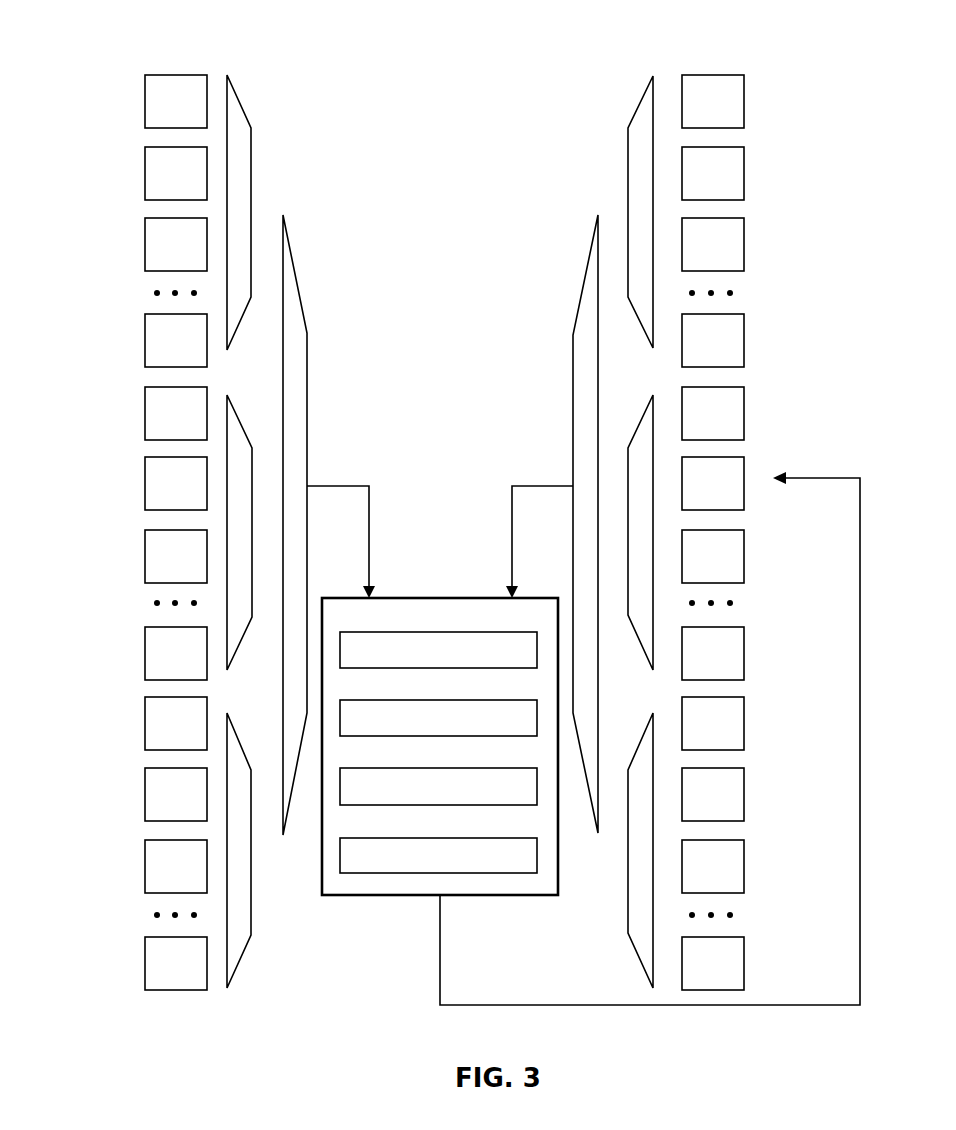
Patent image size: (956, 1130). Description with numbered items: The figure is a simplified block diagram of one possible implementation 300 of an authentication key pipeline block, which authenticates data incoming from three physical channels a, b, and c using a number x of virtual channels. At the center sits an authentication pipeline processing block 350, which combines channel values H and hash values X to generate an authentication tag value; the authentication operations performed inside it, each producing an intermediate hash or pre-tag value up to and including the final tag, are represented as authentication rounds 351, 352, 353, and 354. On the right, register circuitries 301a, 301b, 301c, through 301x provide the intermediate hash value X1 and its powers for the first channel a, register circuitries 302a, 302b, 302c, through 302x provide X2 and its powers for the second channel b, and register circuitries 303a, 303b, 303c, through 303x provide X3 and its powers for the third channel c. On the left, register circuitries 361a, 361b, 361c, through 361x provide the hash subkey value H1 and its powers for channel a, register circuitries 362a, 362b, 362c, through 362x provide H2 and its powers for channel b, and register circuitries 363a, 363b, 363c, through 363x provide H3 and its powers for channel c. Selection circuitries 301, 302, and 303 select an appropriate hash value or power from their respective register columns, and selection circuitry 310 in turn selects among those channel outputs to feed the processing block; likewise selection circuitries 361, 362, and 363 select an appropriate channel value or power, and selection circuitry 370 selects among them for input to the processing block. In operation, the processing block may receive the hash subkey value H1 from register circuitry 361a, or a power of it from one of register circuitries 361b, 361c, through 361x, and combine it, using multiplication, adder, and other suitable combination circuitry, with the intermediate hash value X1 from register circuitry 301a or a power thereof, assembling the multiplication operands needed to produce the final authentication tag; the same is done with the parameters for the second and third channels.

The implementation of an authentication key pipeline block 300 is at (129, 36).
The selection circuitry 301 is at (628, 175).
The register circuitry 301a is at (744, 102).
The register circuitry 301b is at (744, 174).
The register circuitry 301c is at (744, 245).
The register circuitry 301x is at (744, 341).
The selection circuitry 302 is at (643, 420).
The register circuitry 302a is at (744, 414).
The register circuitry 302b is at (744, 488).
The register circuitry 302c is at (744, 560).
The register circuitry 302x is at (744, 654).
The selection circuitry 303 is at (625, 900).
The register circuitry 303a is at (744, 724).
The register circuitry 303b is at (744, 795).
The register circuitry 303c is at (744, 867).
The register circuitry 303x is at (744, 945).
The selection circuitry 310 is at (573, 382).
The authentication pipeline processing block 350 is at (440, 598).
The authentication round 351 is at (476, 632).
The authentication round 352 is at (476, 700).
The authentication round 353 is at (476, 768).
The authentication round 354 is at (476, 838).
The selection circuitry 361 is at (251, 176).
The register circuitry 361a is at (145, 102).
The register circuitry 361b is at (145, 174).
The register circuitry 361c is at (145, 245).
The register circuitry 361x is at (145, 341).
The selection circuitry 362 is at (237, 417).
The register circuitry 362a is at (145, 414).
The register circuitry 362b is at (145, 484).
The register circuitry 362c is at (145, 557).
The register circuitry 362x is at (145, 654).
The selection circuitry 363 is at (251, 900).
The register circuitry 363a is at (145, 724).
The register circuitry 363b is at (145, 795).
The register circuitry 363c is at (145, 867).
The register circuitry 363x is at (145, 958).
The selection circuitry 370 is at (307, 382).